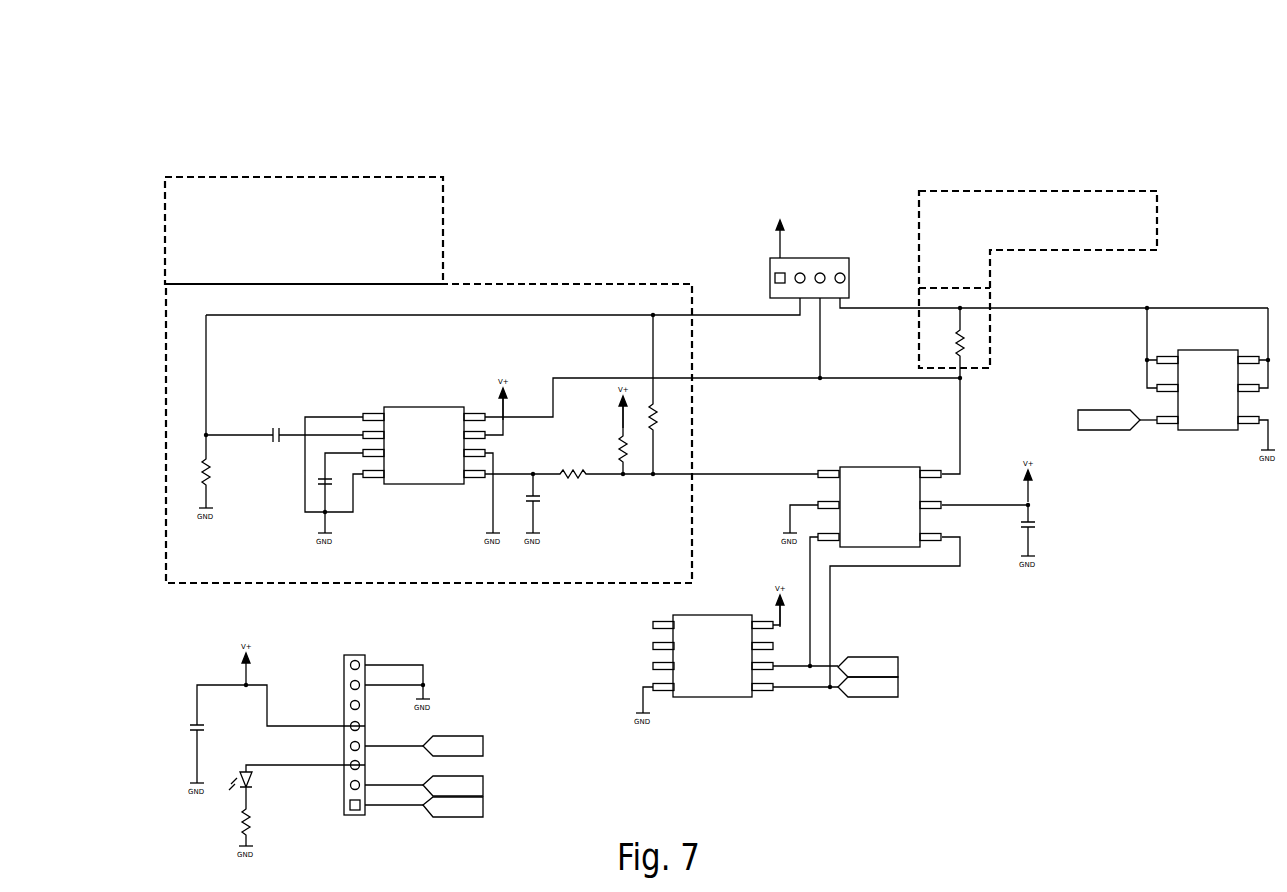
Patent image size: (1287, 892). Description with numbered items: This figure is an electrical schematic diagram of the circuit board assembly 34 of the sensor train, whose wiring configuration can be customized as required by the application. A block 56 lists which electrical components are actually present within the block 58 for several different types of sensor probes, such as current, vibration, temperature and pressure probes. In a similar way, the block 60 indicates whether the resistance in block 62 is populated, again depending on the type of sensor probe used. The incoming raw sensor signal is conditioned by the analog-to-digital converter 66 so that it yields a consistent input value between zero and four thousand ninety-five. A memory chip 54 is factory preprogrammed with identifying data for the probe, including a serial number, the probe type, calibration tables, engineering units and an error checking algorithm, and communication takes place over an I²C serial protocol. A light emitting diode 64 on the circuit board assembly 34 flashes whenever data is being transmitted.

The circuit board assembly 34 is at (648, 146).
The memory chip 54 is at (722, 702).
The block 56 is at (262, 172).
The block 58 is at (603, 283).
The block 60 is at (1032, 186).
The block 62 is at (1000, 328).
The light emitting diode 64 is at (235, 767).
The analog-to-digital converter 66 is at (940, 518).